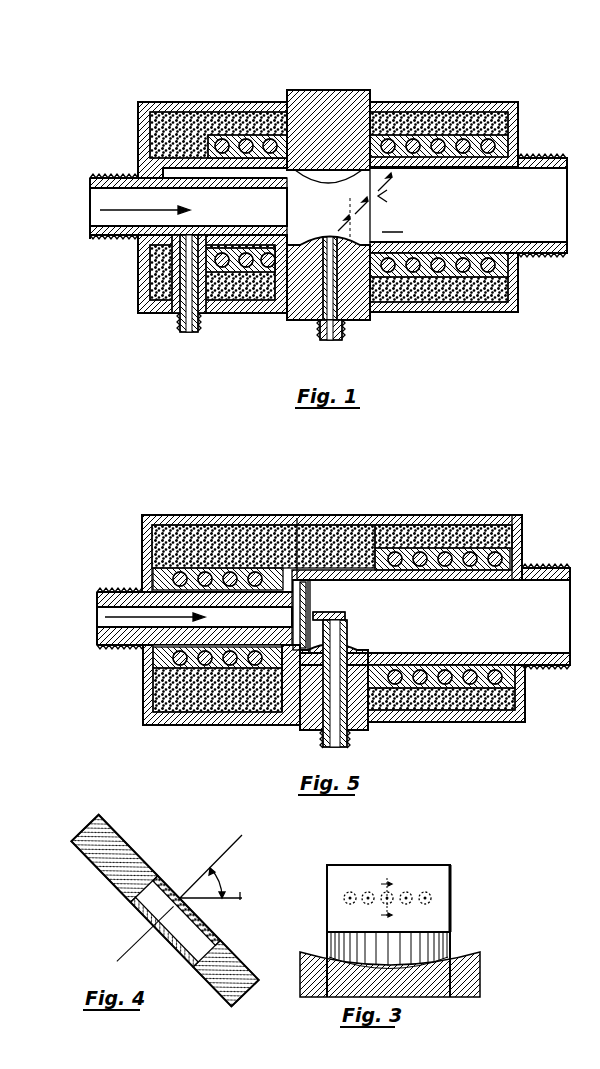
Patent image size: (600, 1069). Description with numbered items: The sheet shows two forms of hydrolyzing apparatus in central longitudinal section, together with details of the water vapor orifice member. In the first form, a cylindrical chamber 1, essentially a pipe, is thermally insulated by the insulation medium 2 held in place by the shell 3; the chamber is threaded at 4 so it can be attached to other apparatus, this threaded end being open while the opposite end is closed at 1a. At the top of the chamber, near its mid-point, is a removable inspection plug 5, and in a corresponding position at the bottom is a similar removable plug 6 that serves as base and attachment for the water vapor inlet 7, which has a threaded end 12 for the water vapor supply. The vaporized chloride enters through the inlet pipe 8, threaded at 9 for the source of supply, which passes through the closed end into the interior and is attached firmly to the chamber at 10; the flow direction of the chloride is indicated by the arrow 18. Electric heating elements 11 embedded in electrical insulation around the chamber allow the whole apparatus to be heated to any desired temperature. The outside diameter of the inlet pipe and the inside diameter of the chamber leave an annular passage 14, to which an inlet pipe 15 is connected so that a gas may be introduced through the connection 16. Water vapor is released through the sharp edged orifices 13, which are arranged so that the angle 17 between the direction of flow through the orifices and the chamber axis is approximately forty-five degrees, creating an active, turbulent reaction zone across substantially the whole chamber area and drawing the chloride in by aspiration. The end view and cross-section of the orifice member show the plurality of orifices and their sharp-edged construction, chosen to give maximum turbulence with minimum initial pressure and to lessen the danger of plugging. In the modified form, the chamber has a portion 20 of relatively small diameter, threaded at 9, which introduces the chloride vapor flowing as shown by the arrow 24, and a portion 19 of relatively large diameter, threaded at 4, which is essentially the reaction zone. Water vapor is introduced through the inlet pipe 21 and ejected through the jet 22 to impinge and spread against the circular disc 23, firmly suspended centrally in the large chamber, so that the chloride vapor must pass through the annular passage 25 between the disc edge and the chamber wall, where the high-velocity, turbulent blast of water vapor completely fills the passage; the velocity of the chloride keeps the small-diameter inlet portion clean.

In FIG. 1, the cylindrical chamber 1 is at (484, 200).
In FIG. 5, the cylindrical chamber 1 is at (435, 616).
In FIG. 1, the closed end of chamber 1a is at (140, 252).
In FIG. 1, the insulation medium 2 is at (495, 110).
In FIG. 5, the insulation medium 2 is at (503, 530).
In FIG. 1, the shell 3 is at (468, 100).
In FIG. 5, the shell 3 is at (485, 515).
In FIG. 1, the threaded end 4 is at (558, 166).
In FIG. 5, the threaded end 4 is at (556, 570).
In FIG. 1, the inspection plug 5 is at (341, 100).
In FIG. 1, the plug 6 is at (372, 315).
In FIG. 5, the plug 6 is at (382, 726).
In FIG. 3, the plug 6 is at (463, 967).
In FIG. 1, the water vapor inlet 7 is at (322, 326).
In FIG. 5, the water vapor inlet 7 is at (334, 687).
In FIG. 3, the water vapor inlet 7 is at (400, 940).
In FIG. 1, the inlet pipe 8 is at (140, 236).
In FIG. 1, the threaded end of inlet pipe 9 is at (103, 180).
In FIG. 5, the threaded end of inlet pipe 9 is at (97, 592).
In FIG. 1, the attachment point 10 is at (138, 172).
In FIG. 1, the electric heating elements 11 is at (430, 138).
In FIG. 5, the electric heating elements 11 is at (430, 545).
In FIG. 1, the threaded end of water vapor inlet 12 is at (343, 326).
In FIG. 5, the threaded end of water vapor inlet 12 is at (350, 738).
In FIG. 1, the sharp edged orifices 13 is at (334, 236).
In FIG. 4, the sharp edged orifices 13 is at (180, 894).
In FIG. 3, the sharp edged orifices 13 is at (390, 896).
In FIG. 1, the annular passage 14 is at (228, 172).
In FIG. 1, the inlet pipe 15 is at (180, 305).
In FIG. 1, the connection 16 is at (204, 316).
In FIG. 1, the angle 17 is at (392, 232).
In FIG. 4, the angle 17 is at (232, 872).
In FIG. 1, the arrow 18 is at (93, 238).
In FIG. 5, the large diameter portion 19 is at (523, 575).
In FIG. 5, the small diameter portion 20 is at (155, 605).
In FIG. 5, the inlet pipe 21 is at (312, 730).
In FIG. 5, the jet 22 is at (315, 612).
In FIG. 5, the circular disc 23 is at (297, 578).
In FIG. 5, the arrow 24 is at (97, 622).
In FIG. 5, the annular passage 25 is at (284, 652).